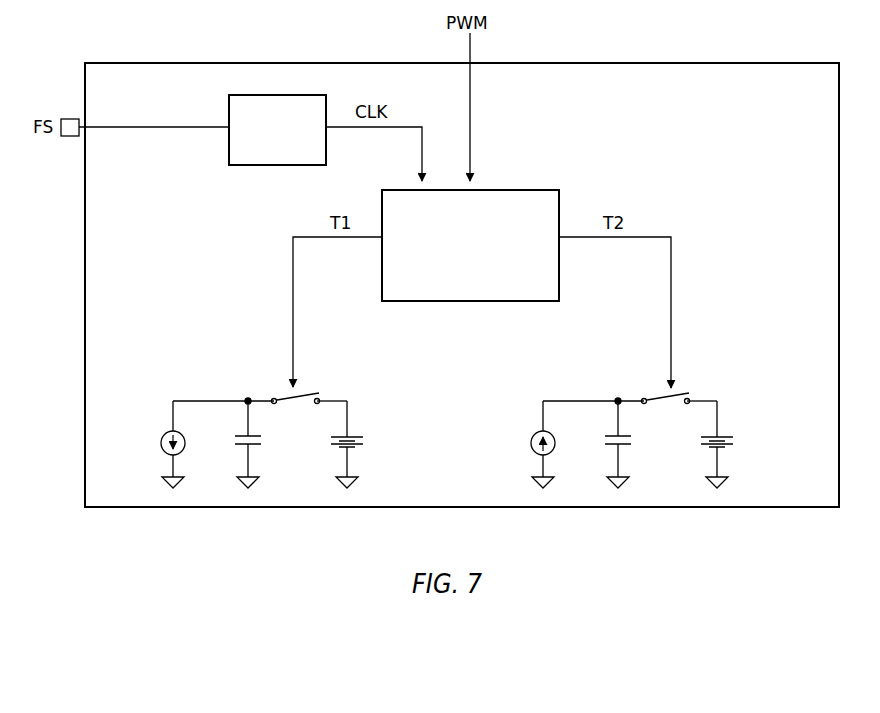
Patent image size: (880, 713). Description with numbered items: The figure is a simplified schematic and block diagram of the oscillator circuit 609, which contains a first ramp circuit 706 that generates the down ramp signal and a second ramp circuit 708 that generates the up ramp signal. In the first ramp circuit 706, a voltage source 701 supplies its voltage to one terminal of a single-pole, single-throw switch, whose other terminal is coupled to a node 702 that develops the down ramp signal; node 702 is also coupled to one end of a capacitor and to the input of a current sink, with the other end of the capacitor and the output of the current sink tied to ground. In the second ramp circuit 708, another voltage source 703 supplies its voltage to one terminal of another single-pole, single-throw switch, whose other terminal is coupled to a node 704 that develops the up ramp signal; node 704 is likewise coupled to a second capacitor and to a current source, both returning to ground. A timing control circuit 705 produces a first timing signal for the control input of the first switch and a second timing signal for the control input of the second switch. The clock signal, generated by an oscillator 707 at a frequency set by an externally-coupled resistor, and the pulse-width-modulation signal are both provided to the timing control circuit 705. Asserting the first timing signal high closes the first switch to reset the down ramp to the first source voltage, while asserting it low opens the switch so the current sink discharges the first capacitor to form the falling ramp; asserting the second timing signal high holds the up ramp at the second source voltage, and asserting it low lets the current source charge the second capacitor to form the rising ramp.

The oscillator circuit 609 is at (631, 63).
The oscillator 707 is at (277, 130).
The timing control circuit 705 is at (470, 245).
The first ramp circuit 706 is at (387, 380).
The second ramp circuit 708 is at (722, 372).
The node 702 is at (248, 401).
The node 704 is at (618, 401).
The voltage source 701 is at (350, 447).
The voltage source 703 is at (720, 447).